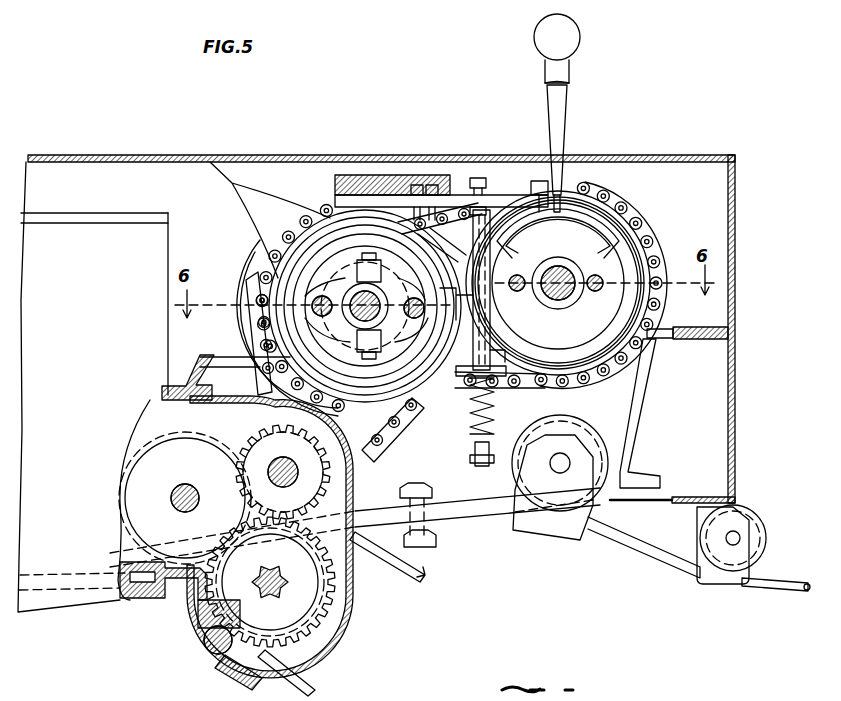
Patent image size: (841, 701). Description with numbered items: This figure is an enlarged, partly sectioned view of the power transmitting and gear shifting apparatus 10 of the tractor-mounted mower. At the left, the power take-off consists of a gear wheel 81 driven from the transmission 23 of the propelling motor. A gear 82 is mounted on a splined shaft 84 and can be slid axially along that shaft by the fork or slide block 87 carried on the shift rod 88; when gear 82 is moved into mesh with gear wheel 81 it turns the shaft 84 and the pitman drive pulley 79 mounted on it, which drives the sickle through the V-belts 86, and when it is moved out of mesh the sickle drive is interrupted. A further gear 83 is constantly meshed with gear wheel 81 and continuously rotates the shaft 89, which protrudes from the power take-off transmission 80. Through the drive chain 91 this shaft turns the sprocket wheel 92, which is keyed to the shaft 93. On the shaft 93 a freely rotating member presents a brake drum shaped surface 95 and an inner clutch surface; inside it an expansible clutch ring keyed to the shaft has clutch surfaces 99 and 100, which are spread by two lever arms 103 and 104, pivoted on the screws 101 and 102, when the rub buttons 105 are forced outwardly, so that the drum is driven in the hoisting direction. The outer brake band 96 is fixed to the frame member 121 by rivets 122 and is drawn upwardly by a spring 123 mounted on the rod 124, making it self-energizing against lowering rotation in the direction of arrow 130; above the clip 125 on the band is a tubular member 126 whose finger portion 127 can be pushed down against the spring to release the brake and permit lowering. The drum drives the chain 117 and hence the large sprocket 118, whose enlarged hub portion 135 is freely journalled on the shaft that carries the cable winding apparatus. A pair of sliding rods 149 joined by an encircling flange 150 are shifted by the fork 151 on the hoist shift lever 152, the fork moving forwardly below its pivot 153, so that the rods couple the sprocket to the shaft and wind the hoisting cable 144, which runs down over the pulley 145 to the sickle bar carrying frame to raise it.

The housing 10 is at (751, 229).
The transmission 23 is at (80, 228).
The pitman drive pulley 79 is at (354, 604).
The power take-off transmission 80 is at (306, 640).
The gear wheel 81 is at (125, 499).
The gear 82 is at (222, 590).
The gear 83 is at (345, 503).
The splined shaft 84 is at (300, 630).
The V-belts 86 is at (420, 560).
The fork 87 is at (215, 620).
The shift rod 88 is at (205, 655).
The shaft 89 is at (288, 470).
The drive chain 91 is at (258, 340).
The sprocket wheel 92 is at (310, 232).
The shaft 93 is at (382, 262).
The brake drum shaped surface 95 is at (266, 290).
The brake band 96 is at (413, 398).
The clutch surface 99 is at (312, 262).
The clutch surface 100 is at (325, 372).
The screw 101 is at (414, 318).
The screw 102 is at (322, 295).
The lever arm 103 is at (383, 275).
The lever arm 104 is at (360, 350).
The rub buttons 105 is at (340, 262).
The chain 117 is at (640, 228).
The large sprocket 118 is at (628, 256).
The frame member 121 is at (453, 195).
The rivets 122 is at (417, 185).
The spring 123 is at (470, 438).
The rod 124 is at (478, 468).
The clip 125 is at (462, 376).
The tubular member 126 is at (492, 335).
The finger portion 127 is at (538, 244).
The arrow 130 is at (370, 416).
The hub portion 135 is at (557, 300).
The hoisting cable 144 is at (772, 588).
The pulley 145 is at (606, 440).
The sliding rods 149 is at (517, 291).
The encircling flange 150 is at (578, 322).
The fork 151 is at (606, 212).
The hoist shift lever 152 is at (562, 105).
The pivot 153 is at (546, 190).